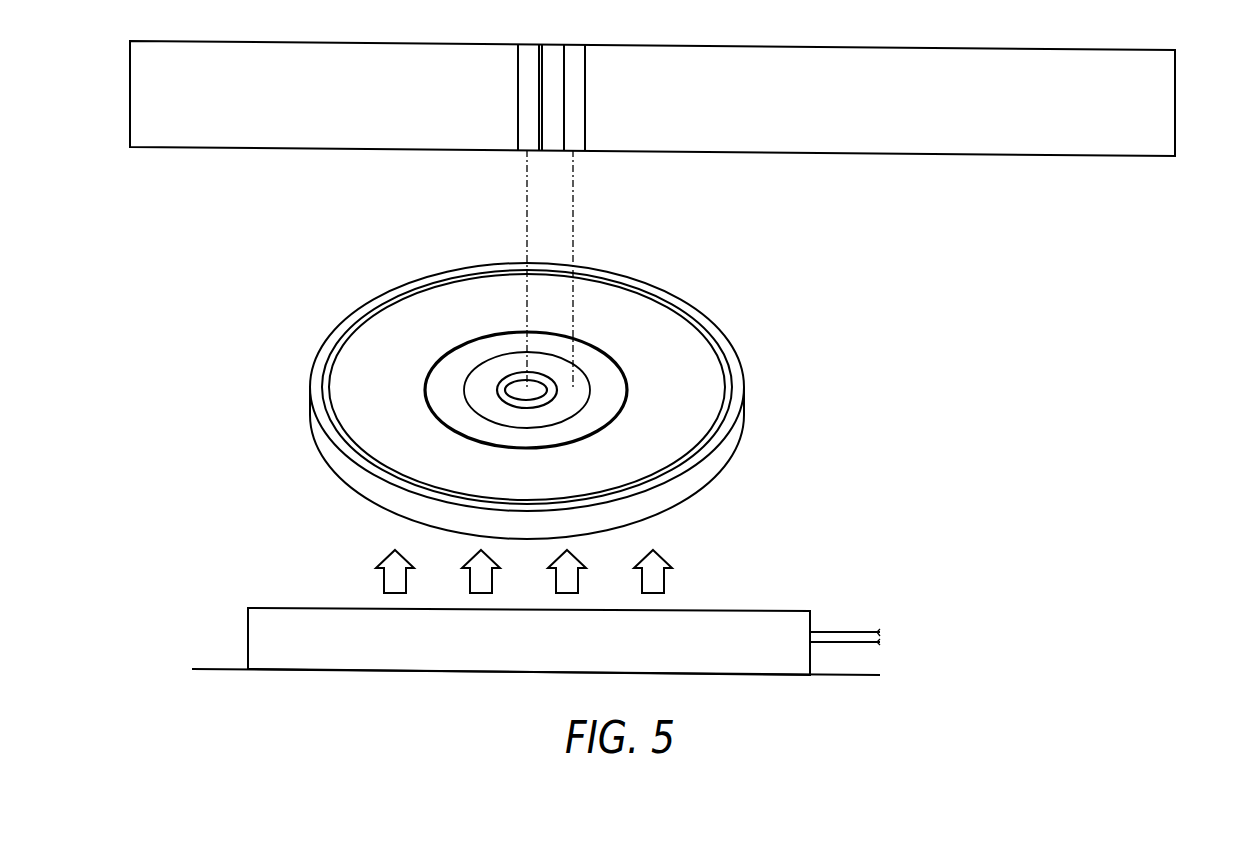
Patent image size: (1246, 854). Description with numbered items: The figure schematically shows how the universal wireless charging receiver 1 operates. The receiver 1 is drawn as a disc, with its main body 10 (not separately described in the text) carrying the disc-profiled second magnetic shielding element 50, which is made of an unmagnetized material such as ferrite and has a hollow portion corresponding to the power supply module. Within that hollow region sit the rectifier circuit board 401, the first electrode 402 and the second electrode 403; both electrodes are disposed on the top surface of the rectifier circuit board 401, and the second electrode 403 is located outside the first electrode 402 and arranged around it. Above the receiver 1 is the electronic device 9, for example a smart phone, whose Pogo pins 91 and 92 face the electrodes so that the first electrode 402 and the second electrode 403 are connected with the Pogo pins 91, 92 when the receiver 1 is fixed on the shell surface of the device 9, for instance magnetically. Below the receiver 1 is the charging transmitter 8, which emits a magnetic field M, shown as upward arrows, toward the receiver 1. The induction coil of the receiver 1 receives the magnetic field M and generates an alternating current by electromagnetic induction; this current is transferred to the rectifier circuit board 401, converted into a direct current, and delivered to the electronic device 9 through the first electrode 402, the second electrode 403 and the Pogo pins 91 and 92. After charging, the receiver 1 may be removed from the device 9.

The universal wireless charging receiver 1 is at (508, 381).
The disc body 10 is at (347, 465).
The second magnetic shielding element 50 is at (705, 365).
The rectifier circuit board 401 is at (600, 403).
The first electrode 402 is at (517, 387).
The second electrode 403 is at (570, 402).
The electronic device 9 is at (210, 133).
The Pogo pin 91 is at (518, 92).
The Pogo pin 92 is at (577, 97).
The charging transmitter 8 is at (257, 641).
The magnetic field M is at (663, 575).